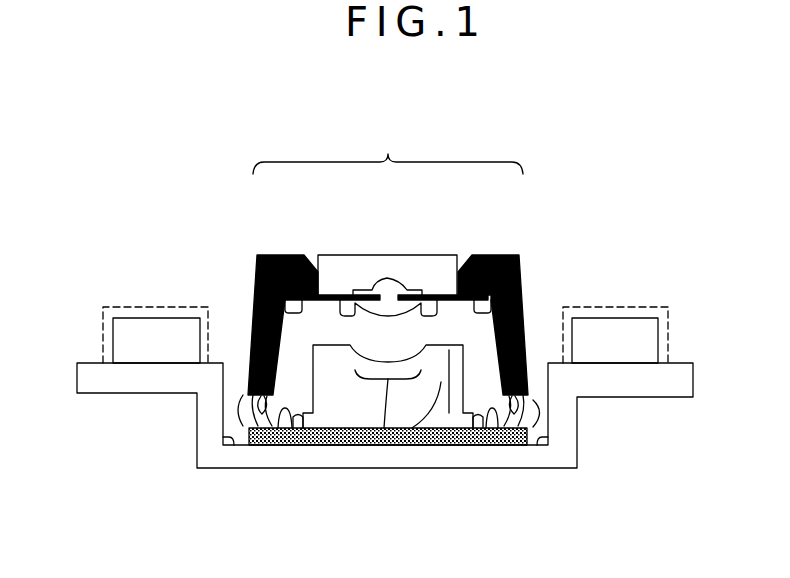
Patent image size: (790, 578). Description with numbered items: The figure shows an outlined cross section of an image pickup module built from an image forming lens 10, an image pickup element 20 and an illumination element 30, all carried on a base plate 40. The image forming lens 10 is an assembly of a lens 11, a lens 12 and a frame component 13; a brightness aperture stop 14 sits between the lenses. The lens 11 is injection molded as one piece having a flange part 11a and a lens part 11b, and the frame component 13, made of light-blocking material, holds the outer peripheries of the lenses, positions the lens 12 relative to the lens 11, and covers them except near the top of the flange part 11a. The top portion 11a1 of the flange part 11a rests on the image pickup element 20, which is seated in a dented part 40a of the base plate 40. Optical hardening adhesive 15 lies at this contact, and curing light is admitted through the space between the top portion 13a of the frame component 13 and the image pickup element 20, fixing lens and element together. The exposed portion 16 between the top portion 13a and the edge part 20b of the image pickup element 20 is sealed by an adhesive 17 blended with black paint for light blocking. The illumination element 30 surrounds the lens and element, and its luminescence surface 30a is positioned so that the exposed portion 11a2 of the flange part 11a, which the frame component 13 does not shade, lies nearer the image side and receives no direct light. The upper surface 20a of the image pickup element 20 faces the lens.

The image forming lens 10 is at (388, 150).
The lens 11 is at (316, 330).
The flange part 11a is at (413, 428).
The top portion of the flange part 11a1 is at (283, 445).
The exposed portion of the flange part 11a2 is at (293, 428).
The lens part 11b is at (362, 428).
The lens 12 is at (363, 270).
The frame component 13 is at (288, 253).
The top portion of the frame component 13a is at (522, 408).
The brightness aperture stop 14 is at (437, 292).
The optical hardening adhesive 15 is at (304, 432).
The exposed portion 16 is at (233, 408).
The adhesive having light blocking function 17 is at (247, 393).
The image pickup element 20 is at (337, 430).
The upper surface of substrate 20a is at (383, 428).
The edge part of the image pickup element 20b is at (250, 438).
The illumination element 30 is at (138, 325).
The luminescence surface 30a is at (103, 340).
The base plate 40 is at (568, 443).
The dented part of the base plate 40a is at (565, 470).